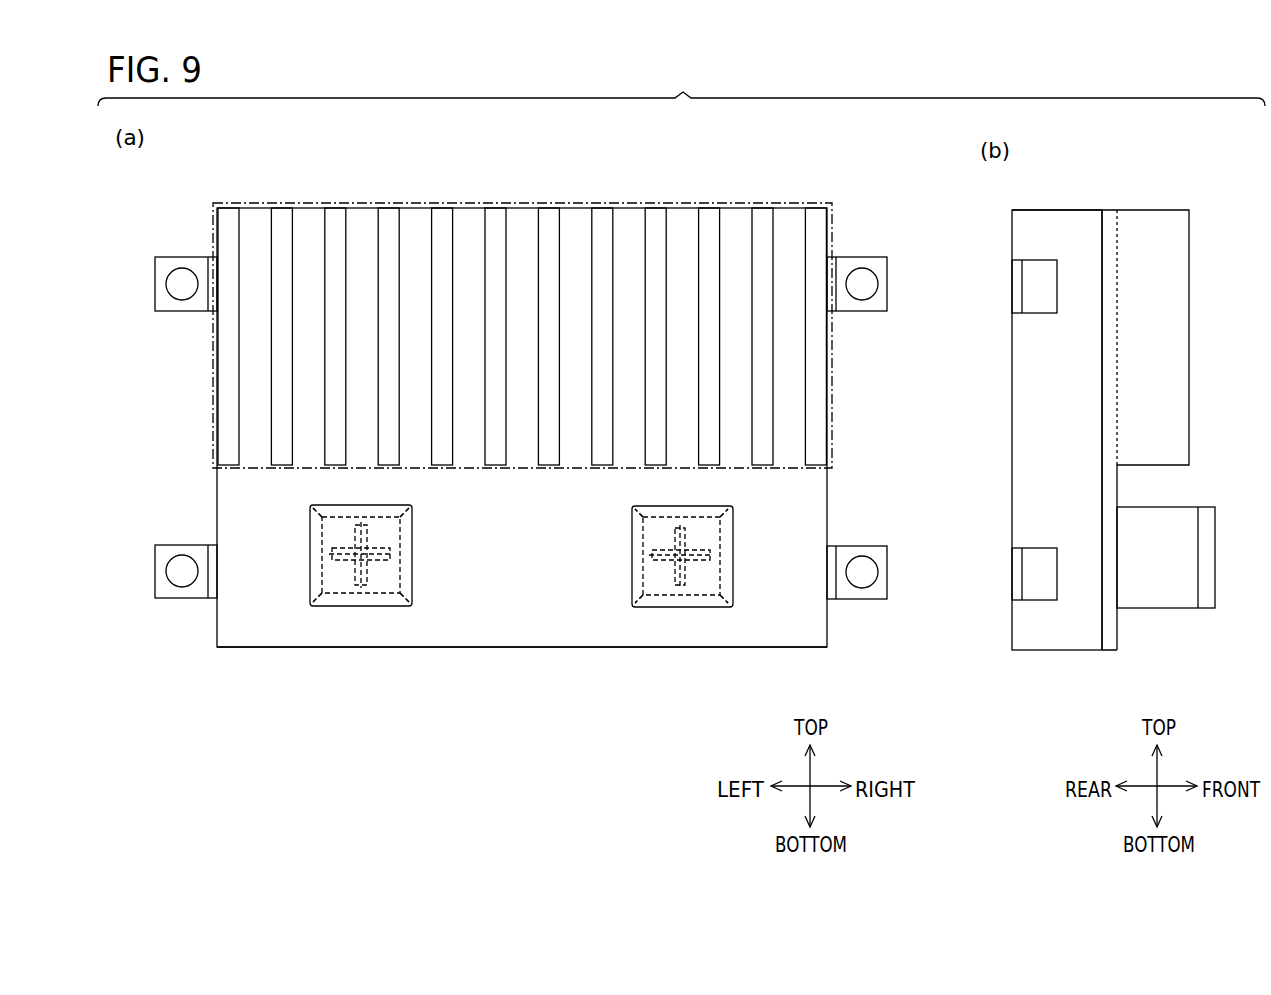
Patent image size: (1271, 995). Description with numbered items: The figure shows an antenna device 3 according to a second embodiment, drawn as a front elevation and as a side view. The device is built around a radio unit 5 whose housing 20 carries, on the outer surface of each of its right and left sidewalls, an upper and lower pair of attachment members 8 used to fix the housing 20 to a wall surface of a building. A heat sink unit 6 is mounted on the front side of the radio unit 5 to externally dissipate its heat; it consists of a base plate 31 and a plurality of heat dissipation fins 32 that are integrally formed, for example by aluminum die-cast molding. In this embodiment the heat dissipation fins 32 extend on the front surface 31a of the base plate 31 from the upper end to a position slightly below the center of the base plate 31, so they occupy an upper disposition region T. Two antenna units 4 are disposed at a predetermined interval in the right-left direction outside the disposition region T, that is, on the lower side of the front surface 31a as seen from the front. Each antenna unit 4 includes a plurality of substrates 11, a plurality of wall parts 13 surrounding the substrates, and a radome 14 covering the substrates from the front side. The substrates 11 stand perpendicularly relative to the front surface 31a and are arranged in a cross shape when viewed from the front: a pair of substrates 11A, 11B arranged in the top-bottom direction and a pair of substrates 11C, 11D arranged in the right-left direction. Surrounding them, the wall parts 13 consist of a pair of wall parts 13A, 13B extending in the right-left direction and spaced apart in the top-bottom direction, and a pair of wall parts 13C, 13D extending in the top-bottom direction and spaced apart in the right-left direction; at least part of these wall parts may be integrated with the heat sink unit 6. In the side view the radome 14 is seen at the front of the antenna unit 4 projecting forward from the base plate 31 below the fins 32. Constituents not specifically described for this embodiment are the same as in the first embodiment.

The antenna device 3 is at (182, 207).
The disposition region T is at (519, 203).
The heat dissipation fins 32 is at (277, 216).
The attachment members 8 is at (153, 281).
The antenna unit 4 is at (360, 608).
The radome 14 is at (332, 603).
The substrates 11 is at (361, 555).
The substrate 11A is at (348, 540).
The substrate 11B is at (367, 568).
The substrate 11C is at (345, 564).
The substrate 11D is at (385, 546).
The wall parts 13 is at (1147, 592).
The wall part 13A is at (702, 523).
The wall part 13B is at (707, 602).
The wall part 13C is at (630, 570).
The wall part 13D is at (735, 571).
The heat sink unit 6 is at (442, 649).
The front surface 31a is at (523, 628).
The base plate 31 is at (1108, 640).
The housing 20 is at (1060, 632).
The radio unit 5 is at (1058, 208).